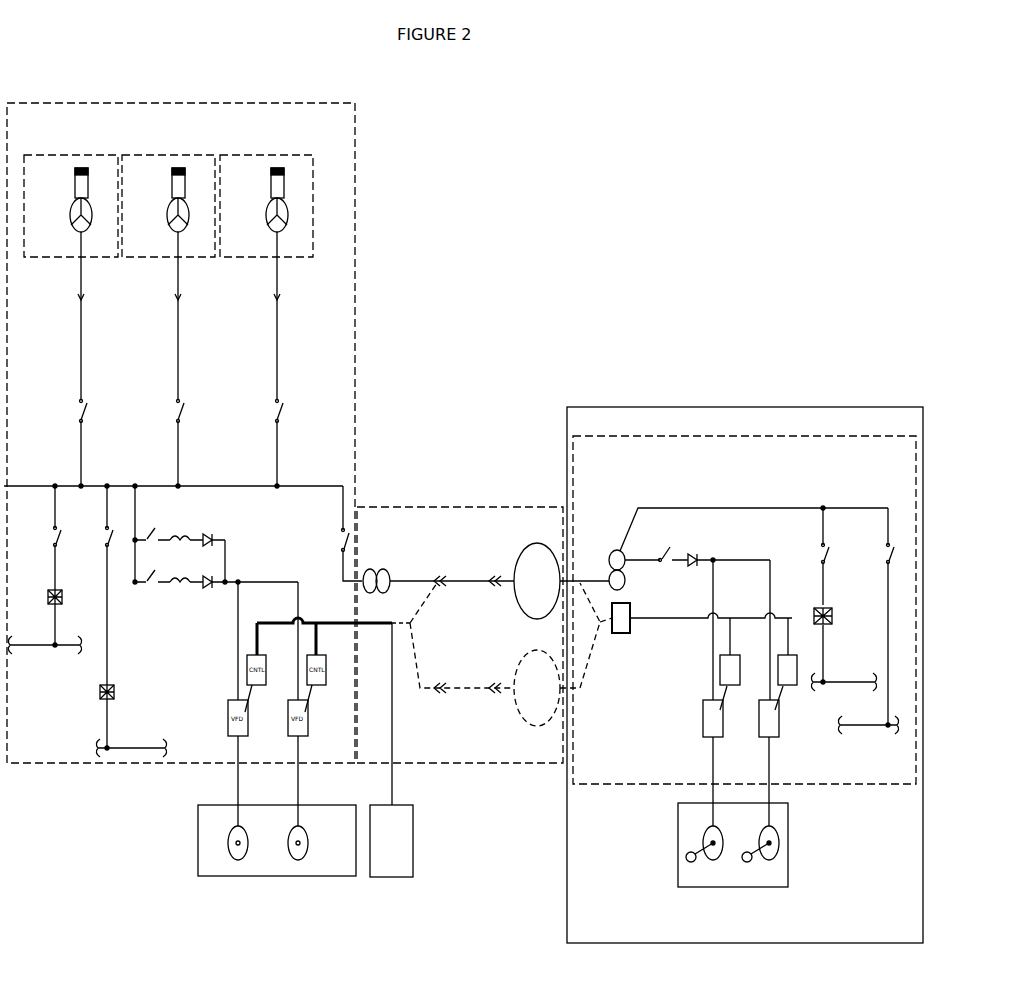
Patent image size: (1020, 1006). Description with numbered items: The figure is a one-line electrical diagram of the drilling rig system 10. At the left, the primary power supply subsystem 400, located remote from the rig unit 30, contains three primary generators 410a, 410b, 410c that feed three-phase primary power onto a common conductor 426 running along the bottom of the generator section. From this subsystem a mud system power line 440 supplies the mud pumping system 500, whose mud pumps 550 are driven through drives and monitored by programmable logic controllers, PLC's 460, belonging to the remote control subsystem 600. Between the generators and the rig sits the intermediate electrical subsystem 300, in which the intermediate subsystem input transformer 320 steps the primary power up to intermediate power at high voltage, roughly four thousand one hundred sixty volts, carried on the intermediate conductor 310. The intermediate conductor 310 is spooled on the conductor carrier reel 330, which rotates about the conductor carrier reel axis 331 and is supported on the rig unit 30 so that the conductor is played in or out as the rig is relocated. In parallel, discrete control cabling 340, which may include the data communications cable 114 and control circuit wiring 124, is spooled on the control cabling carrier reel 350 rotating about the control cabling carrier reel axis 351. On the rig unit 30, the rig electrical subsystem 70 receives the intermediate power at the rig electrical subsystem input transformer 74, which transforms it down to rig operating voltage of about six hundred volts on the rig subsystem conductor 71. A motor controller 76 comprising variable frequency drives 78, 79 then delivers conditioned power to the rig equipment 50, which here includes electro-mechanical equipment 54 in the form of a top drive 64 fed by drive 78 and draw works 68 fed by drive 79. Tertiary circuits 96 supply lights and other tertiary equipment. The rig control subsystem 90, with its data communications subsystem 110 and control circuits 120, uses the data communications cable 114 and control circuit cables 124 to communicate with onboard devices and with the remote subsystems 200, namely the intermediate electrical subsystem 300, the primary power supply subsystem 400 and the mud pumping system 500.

The drilling rig system 10 is at (499, 270).
The rig unit 30 is at (658, 407).
The rig equipment 50 is at (708, 872).
The electro-mechanical equipment 54 is at (726, 874).
The top drive 64 is at (705, 832).
The draw works 68 is at (775, 853).
The rig electrical subsystem 70 is at (744, 610).
The rig subsystem conductor 71 is at (637, 557).
The rig electrical subsystem input transformer 74 is at (617, 534).
The motor controller 76 is at (692, 716).
The variable frequency drive 78 is at (710, 738).
The variable frequency drive 79 is at (772, 728).
The rig control subsystem 90 is at (621, 626).
The tertiary circuits 96 is at (888, 640).
The data communications subsystem 110 is at (584, 676).
The data communications cable 114 is at (590, 635).
The control circuits 120 is at (781, 603).
The control circuit cables 124 is at (600, 652).
The remote subsystems 200 is at (389, 928).
The intermediate electrical subsystem 300 is at (462, 513).
The intermediate conductor 310 is at (460, 583).
The intermediate subsystem input transformer 320 is at (382, 568).
The conductor carrier reel 330 is at (530, 548).
The conductor carrier reel axis 331 is at (537, 574).
The discrete control cabling 340 is at (442, 690).
The control cabling carrier reel 350 is at (520, 712).
The control cabling carrier reel axis 351 is at (536, 700).
The primary power supply subsystem 400 is at (261, 103).
The primary generator 410a is at (271, 234).
The primary generator 410b is at (172, 234).
The primary generator 410c is at (75, 234).
The AC bus 426 is at (247, 486).
The mud system power line 440 is at (277, 582).
The PLC's 460 is at (790, 687).
The mud pumping system 500 is at (218, 862).
The mud pump 550 is at (297, 862).
The control subsystem 600 is at (413, 842).